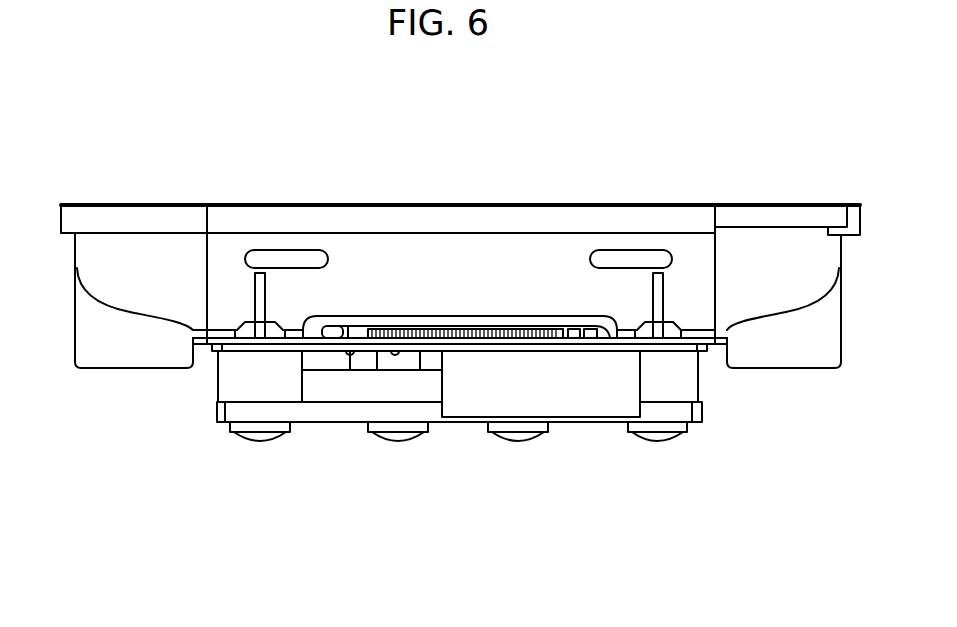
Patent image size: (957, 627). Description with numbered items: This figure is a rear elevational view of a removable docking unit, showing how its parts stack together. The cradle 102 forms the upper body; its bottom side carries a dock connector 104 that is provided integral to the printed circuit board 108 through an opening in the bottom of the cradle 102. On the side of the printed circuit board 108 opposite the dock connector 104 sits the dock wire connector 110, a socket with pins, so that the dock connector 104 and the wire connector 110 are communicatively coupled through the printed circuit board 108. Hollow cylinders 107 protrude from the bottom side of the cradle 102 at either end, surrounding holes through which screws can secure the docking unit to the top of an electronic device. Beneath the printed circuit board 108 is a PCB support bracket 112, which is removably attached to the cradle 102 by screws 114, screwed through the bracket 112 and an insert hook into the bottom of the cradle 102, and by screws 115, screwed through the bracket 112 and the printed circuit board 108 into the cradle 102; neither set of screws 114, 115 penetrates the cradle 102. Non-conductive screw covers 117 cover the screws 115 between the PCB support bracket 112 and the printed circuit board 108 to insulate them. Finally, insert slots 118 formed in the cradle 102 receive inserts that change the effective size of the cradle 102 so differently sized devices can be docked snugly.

The cradle 102 is at (195, 223).
The dock connector 104 is at (476, 330).
The hollow cylinders 107 is at (122, 343).
The printed circuit board 108 is at (360, 347).
The dock wire connector 110 is at (590, 398).
The PCB support bracket 112 is at (242, 412).
The screws 114 is at (402, 440).
The screws 115 is at (262, 438).
The non-conductive screw covers 117 is at (250, 383).
The insert slots 118 is at (288, 262).